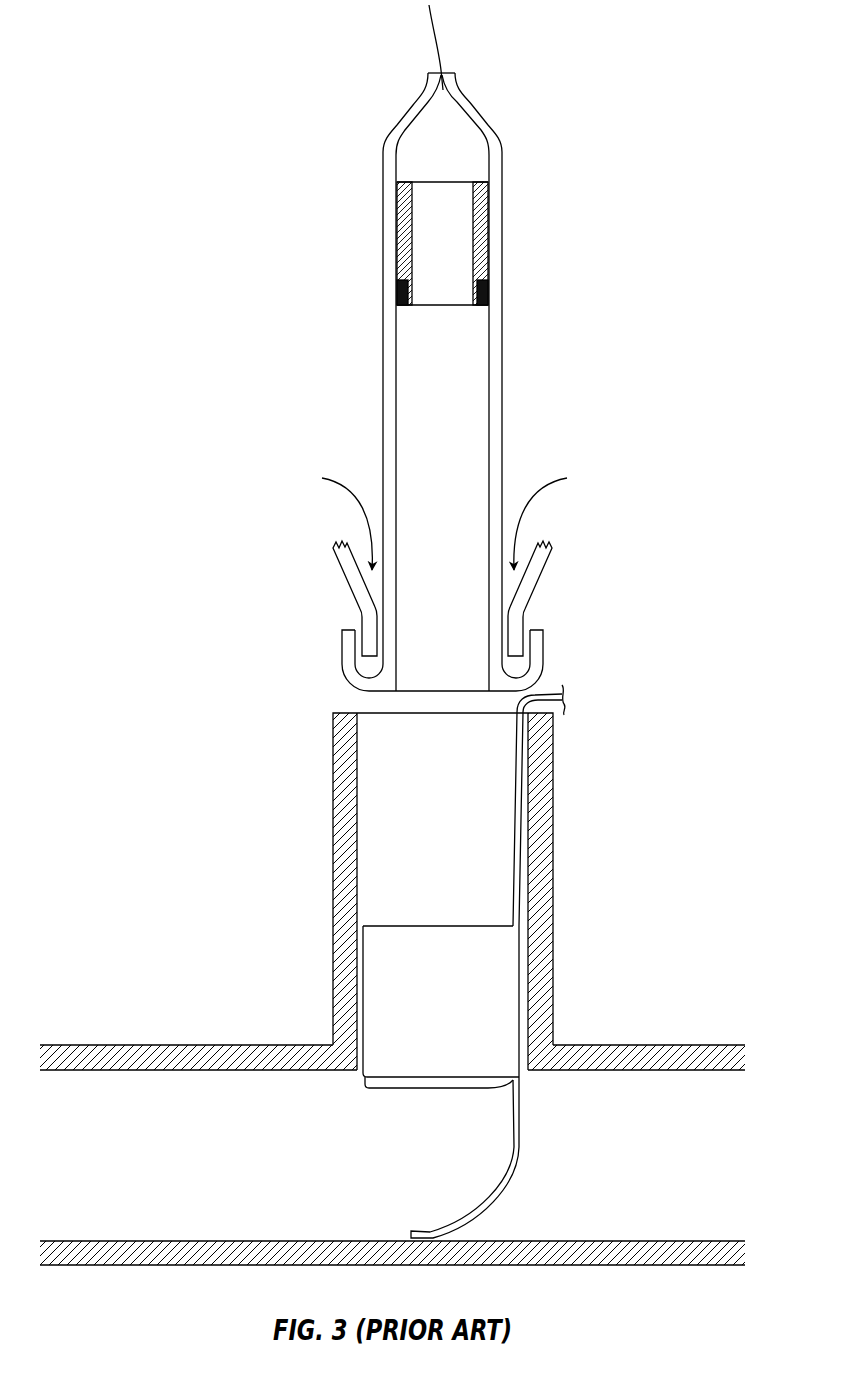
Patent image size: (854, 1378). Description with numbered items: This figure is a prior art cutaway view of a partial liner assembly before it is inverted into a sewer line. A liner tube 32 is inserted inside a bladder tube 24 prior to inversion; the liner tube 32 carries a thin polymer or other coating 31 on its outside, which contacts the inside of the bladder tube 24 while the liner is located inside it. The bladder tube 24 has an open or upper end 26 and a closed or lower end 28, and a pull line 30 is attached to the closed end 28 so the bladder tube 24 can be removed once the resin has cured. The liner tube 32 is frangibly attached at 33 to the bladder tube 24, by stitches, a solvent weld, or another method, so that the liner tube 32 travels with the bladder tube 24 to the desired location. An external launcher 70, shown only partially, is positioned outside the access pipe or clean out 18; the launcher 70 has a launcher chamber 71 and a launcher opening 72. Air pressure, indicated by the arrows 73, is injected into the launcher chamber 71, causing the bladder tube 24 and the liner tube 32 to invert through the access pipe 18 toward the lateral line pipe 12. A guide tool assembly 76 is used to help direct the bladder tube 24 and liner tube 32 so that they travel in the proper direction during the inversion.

The lateral line pipe 12 is at (225, 1047).
The access pipe 18 is at (340, 879).
The bladder tube 24 is at (388, 415).
The open end of the bladder tube 26 is at (377, 692).
The closed end of the bladder tube 28 is at (468, 100).
The pull line 30 is at (432, 42).
The coating 31 is at (397, 257).
The liner tube 32 is at (402, 208).
The frangible attachment 33 is at (395, 295).
The external launcher 70 is at (341, 583).
The launcher chamber 71 is at (444, 519).
The launcher opening 72 is at (503, 632).
The air pressure 73 is at (348, 543).
The guide tool assembly 76 is at (426, 1107).